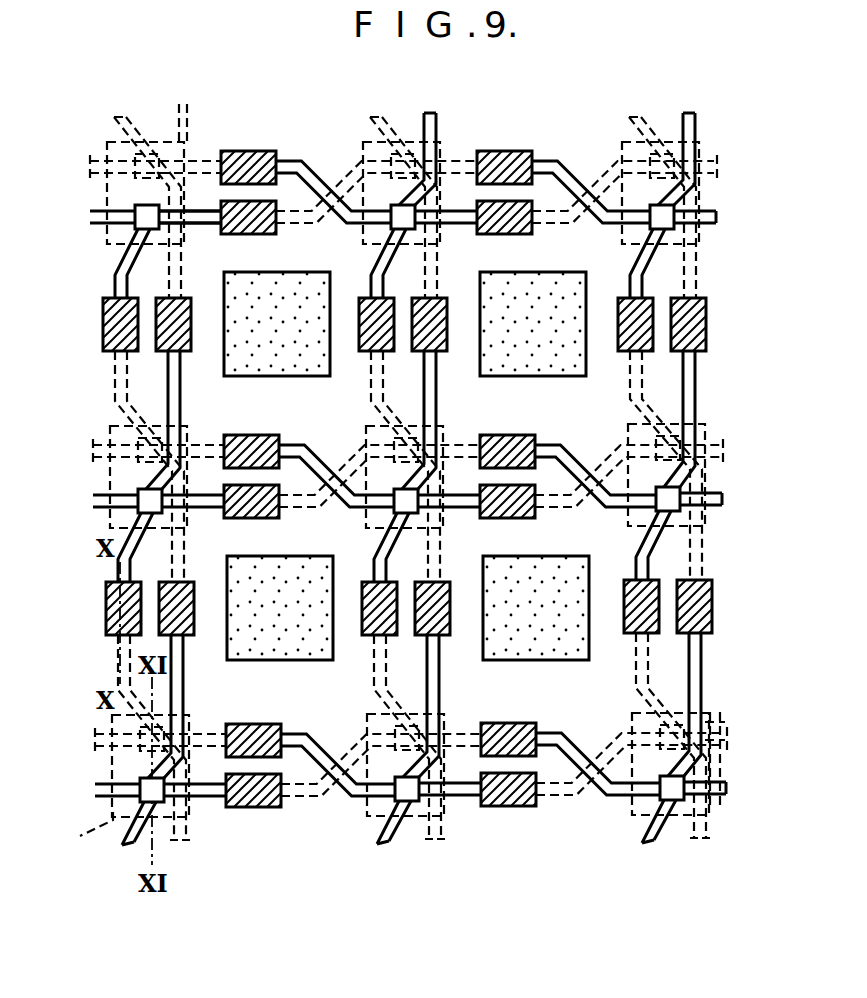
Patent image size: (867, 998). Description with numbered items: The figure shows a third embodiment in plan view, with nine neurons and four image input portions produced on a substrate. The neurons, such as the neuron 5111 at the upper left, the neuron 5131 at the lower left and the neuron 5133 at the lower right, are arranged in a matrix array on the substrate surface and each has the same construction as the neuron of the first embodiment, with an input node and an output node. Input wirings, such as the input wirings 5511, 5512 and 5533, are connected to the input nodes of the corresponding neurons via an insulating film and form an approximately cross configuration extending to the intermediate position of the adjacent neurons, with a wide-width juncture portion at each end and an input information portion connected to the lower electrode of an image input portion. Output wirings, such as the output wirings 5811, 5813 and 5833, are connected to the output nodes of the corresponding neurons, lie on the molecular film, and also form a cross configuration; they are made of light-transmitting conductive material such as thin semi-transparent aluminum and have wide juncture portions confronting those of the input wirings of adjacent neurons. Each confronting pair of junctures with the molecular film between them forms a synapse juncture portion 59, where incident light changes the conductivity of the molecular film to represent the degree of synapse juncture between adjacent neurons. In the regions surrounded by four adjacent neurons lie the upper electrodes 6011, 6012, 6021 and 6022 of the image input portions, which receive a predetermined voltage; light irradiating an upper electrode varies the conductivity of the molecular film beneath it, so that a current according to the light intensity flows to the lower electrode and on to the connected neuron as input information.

The neuron 5111 is at (181, 107).
The neuron 5131 is at (90, 829).
The neuron 5133 is at (718, 714).
The input wiring 5511 is at (205, 160).
The input wiring 5512 is at (336, 151).
The input wiring 5533 is at (605, 748).
The output wiring 5811 is at (97, 228).
The output wiring 5813 is at (552, 160).
The output wiring 5833 is at (617, 800).
The synapse juncture portion 59 is at (272, 151).
The upper electrode 6011 is at (310, 278).
The upper electrode 6012 is at (577, 278).
The upper electrode 6021 is at (312, 560).
The upper electrode 6022 is at (575, 560).